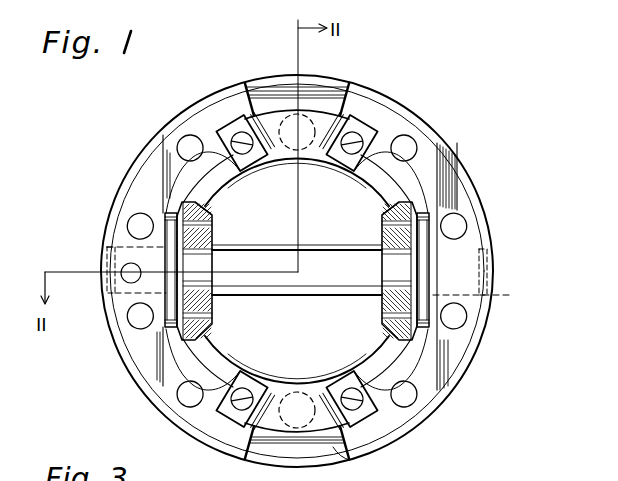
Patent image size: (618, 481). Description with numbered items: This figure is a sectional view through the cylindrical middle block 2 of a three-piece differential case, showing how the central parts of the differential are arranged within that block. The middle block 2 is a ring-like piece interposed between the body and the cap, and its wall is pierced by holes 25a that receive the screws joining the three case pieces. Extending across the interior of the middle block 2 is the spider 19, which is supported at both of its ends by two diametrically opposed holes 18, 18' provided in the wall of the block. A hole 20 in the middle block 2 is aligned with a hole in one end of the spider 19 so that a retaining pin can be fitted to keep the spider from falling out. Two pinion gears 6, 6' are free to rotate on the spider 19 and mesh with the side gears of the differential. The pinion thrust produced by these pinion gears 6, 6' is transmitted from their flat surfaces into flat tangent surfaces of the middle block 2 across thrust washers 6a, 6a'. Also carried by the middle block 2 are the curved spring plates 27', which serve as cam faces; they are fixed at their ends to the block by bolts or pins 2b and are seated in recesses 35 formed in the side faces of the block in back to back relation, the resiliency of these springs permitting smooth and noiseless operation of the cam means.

The cylindrical middle block 2 is at (152, 143).
The bolts or pins 2b is at (233, 130).
The pinion gear 6 is at (212, 271).
The pinion gear 6' is at (380, 271).
The thrust washer 6a is at (130, 244).
The thrust washer 6a' is at (480, 270).
The hole 18 is at (117, 292).
The hole 18' is at (489, 280).
The spider 19 is at (352, 258).
The hole 20 is at (120, 240).
The holes 25a is at (458, 240).
The curved spring plates 27' is at (297, 252).
The recesses 35 is at (348, 458).